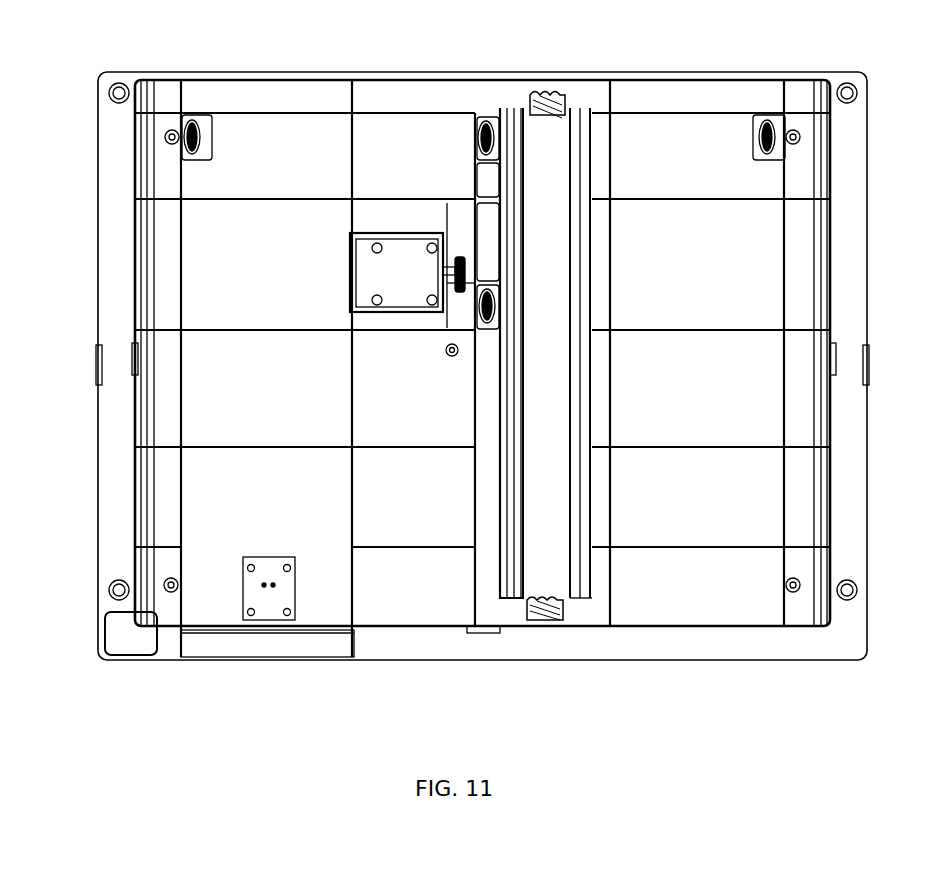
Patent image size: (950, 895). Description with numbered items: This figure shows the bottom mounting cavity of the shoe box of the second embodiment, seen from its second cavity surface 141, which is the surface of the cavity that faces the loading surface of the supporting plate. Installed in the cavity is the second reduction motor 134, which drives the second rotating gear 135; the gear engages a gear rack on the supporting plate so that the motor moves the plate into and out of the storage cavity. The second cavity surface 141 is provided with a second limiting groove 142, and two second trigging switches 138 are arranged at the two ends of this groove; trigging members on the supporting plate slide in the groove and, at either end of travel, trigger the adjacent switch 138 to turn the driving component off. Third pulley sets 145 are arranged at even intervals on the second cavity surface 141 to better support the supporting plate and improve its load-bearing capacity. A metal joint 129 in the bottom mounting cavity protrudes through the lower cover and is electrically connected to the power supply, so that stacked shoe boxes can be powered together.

The metal joint 129 is at (264, 588).
The second reduction motor 134 is at (390, 283).
The second rotating gear 135 is at (458, 258).
The second trigging switch 138 is at (552, 92).
The second cavity surface 141 is at (212, 383).
The second limiting groove 142 is at (566, 468).
The third pulley set 145 is at (197, 123).